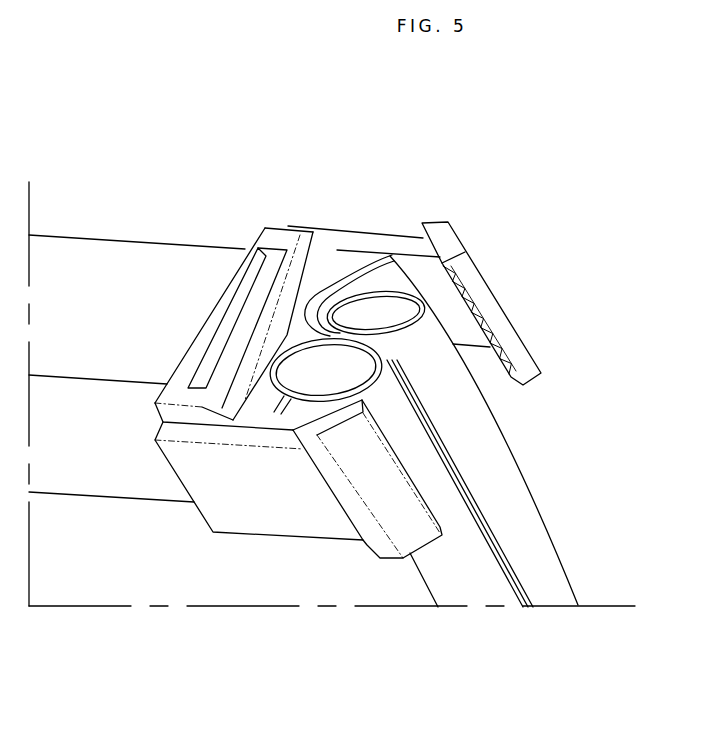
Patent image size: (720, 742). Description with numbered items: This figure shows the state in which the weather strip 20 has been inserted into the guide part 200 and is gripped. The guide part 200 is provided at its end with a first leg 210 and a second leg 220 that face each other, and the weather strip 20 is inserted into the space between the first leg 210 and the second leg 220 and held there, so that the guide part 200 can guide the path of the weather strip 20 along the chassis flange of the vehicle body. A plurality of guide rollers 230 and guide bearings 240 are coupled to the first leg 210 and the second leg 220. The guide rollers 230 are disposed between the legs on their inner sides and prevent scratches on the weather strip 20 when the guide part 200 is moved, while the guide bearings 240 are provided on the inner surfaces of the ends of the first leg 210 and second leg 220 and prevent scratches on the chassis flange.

The weather strip 20 is at (525, 518).
The guide part 200 is at (358, 230).
The first leg 210 is at (492, 320).
The second leg 220 is at (302, 503).
The guide rollers 230 is at (297, 337).
The guide bearings 240 is at (508, 366).